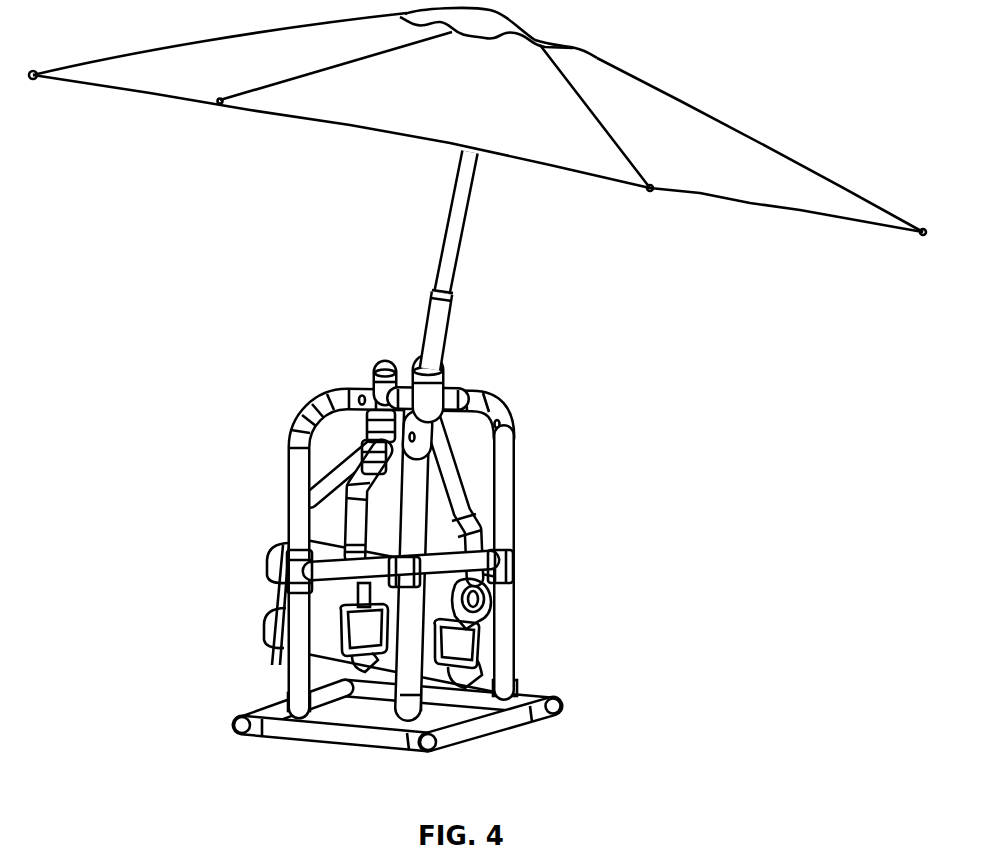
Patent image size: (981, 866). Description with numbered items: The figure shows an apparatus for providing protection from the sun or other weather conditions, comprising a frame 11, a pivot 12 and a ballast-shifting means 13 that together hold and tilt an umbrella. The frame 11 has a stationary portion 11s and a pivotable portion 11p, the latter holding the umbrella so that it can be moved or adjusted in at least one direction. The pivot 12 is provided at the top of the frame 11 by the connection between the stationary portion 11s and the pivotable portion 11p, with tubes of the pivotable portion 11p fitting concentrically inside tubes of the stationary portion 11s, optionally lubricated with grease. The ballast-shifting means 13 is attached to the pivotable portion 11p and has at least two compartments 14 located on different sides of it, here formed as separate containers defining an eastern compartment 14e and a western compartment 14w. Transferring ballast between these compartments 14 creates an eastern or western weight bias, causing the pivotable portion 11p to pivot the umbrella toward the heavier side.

The frame 11 is at (242, 731).
The stationary portion of the frame 11s is at (507, 480).
The pivotable portion of the frame 11p is at (457, 482).
The pivot 12 is at (434, 387).
The ballast-shifting means 13 is at (264, 623).
The compartments 14 is at (398, 681).
The western compartment 14w is at (355, 605).
The eastern compartment 14e is at (456, 589).